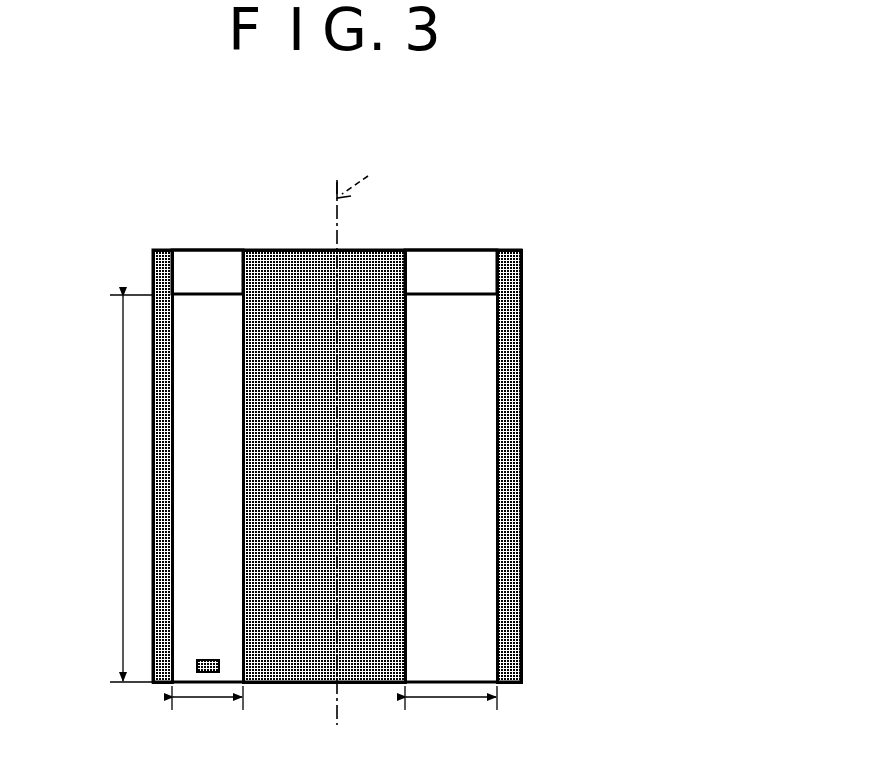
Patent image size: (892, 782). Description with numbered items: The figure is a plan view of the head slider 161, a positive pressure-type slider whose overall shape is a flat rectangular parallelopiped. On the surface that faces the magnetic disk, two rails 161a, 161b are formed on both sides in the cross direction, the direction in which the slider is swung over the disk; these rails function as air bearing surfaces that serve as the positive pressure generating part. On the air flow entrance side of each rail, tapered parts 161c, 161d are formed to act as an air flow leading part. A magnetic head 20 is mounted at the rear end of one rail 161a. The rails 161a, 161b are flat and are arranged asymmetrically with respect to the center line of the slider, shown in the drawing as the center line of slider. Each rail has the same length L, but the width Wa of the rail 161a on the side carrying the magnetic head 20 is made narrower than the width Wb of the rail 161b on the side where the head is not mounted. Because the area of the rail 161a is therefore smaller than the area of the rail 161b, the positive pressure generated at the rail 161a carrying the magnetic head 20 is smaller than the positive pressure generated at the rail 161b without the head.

The head slider 161 is at (290, 184).
The rail 161a is at (188, 338).
The rail 161b is at (468, 421).
The tapered part 161c is at (212, 267).
The tapered part 161d is at (457, 267).
The magnetic head 20 is at (220, 665).
The length of rail L is at (125, 488).
The width of rail 161a Wa is at (207, 708).
The width of rail 161b Wb is at (451, 708).